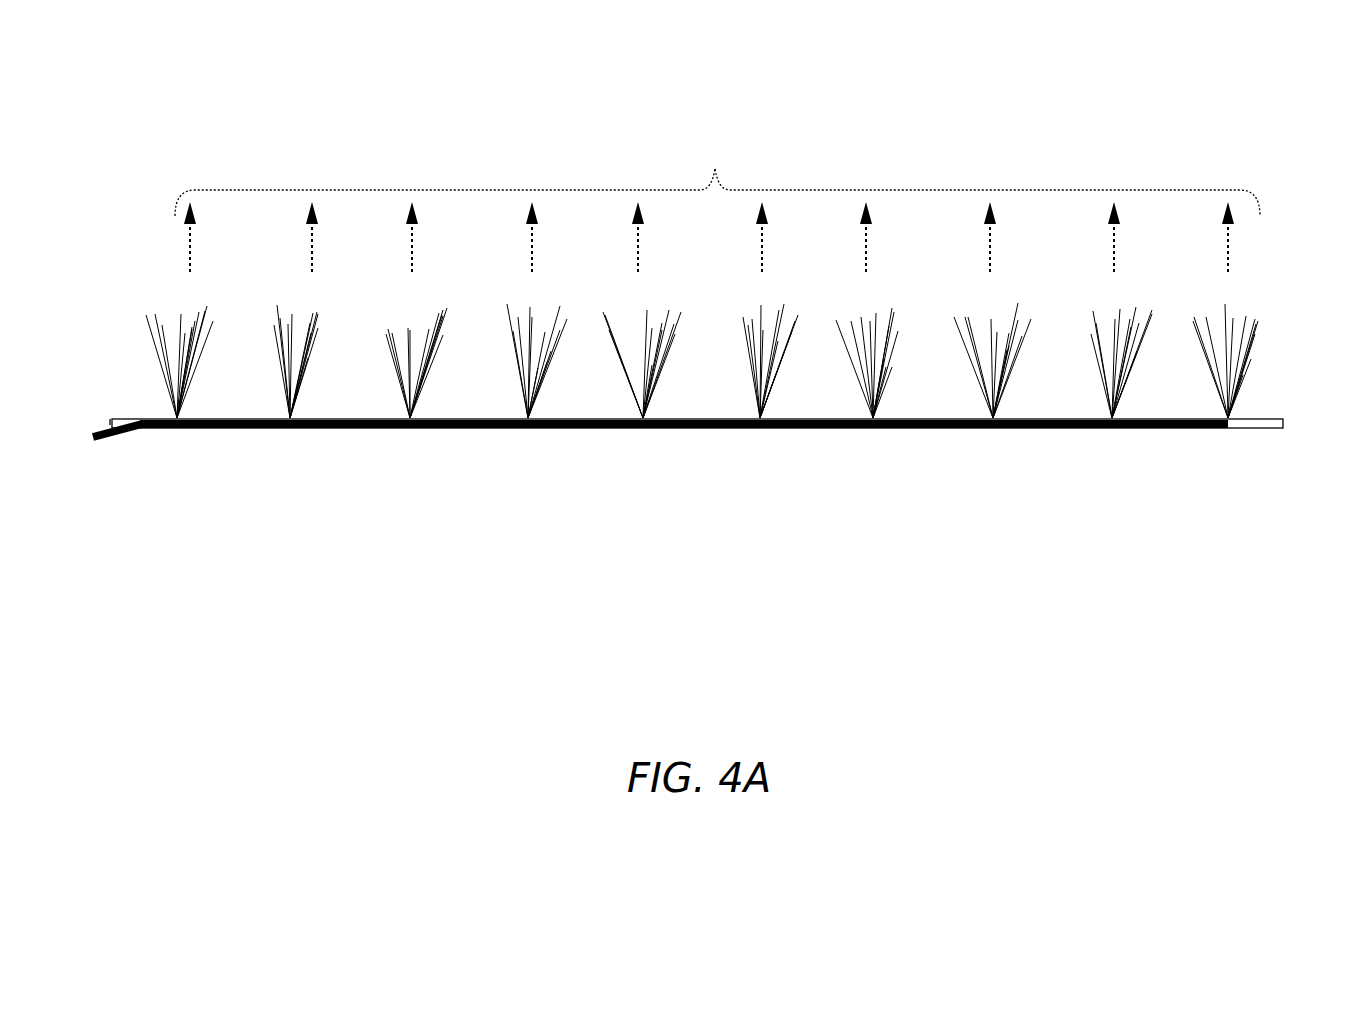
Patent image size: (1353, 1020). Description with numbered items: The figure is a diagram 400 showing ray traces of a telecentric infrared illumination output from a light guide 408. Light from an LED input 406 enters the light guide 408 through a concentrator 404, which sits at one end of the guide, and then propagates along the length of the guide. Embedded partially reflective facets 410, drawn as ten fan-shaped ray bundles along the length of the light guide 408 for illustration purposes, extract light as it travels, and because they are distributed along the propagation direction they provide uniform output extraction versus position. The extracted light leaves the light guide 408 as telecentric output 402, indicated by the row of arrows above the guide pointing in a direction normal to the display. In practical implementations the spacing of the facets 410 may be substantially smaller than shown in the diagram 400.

The diagram 400 is at (694, 288).
The telecentric output 402 is at (735, 153).
The concentrator 404 is at (119, 414).
The LED input 406 is at (97, 443).
The light guide 408 is at (352, 441).
The embedded partially reflective facets 410 is at (1105, 435).